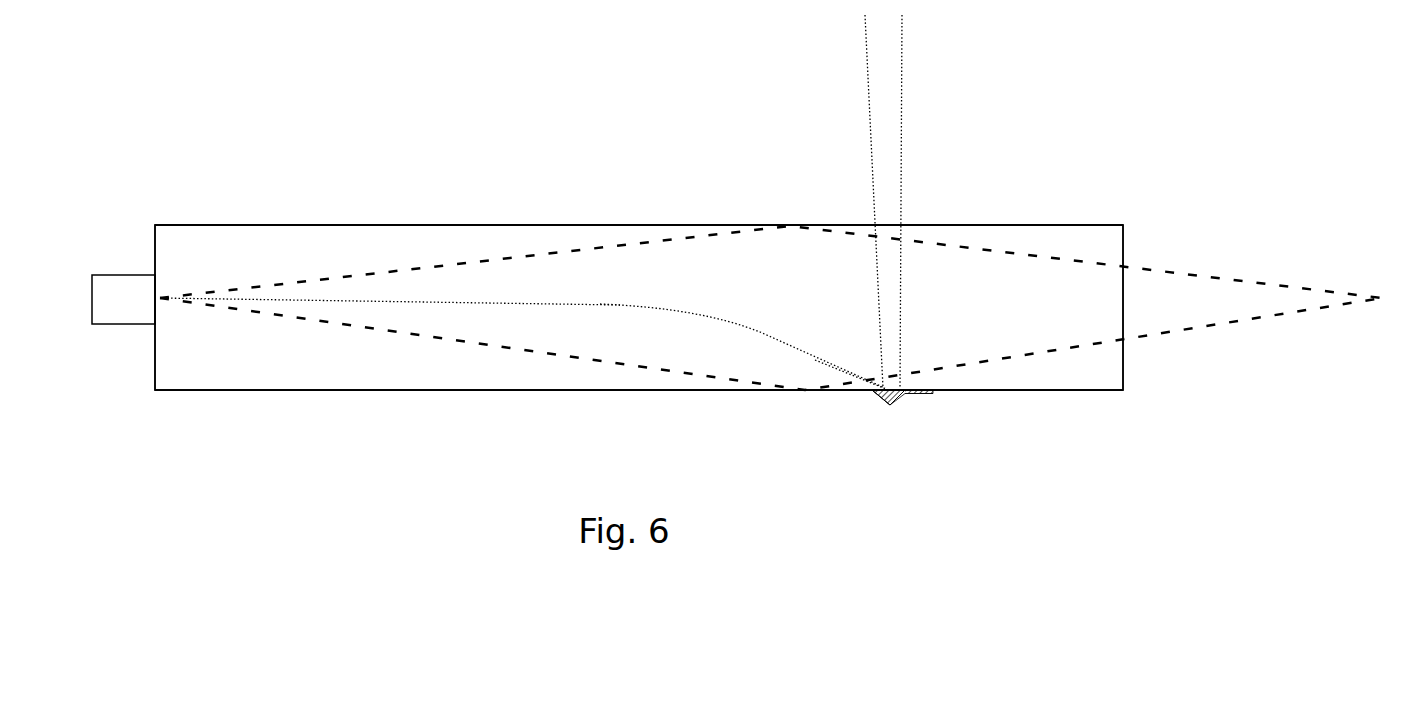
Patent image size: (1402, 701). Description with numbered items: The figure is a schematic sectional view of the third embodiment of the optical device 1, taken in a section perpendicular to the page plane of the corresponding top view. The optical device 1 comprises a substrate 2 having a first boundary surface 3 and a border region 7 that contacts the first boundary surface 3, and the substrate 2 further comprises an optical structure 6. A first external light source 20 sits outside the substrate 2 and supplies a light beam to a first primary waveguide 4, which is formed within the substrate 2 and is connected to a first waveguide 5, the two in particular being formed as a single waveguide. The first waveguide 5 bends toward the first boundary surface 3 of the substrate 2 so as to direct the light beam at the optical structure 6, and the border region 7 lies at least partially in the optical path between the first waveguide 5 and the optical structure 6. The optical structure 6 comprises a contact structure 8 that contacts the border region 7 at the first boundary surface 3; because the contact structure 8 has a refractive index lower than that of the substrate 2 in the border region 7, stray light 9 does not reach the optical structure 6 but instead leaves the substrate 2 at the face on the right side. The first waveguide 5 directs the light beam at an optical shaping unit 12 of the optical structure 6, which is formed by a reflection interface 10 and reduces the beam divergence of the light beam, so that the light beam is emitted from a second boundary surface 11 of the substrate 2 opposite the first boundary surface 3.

The optical device 1 is at (483, 185).
The substrate 2 is at (252, 252).
The first boundary surface 3 is at (407, 391).
The first primary waveguide 4 is at (362, 299).
The first waveguide 5 is at (605, 303).
The optical structure 6 is at (895, 408).
The border region 7 is at (865, 357).
The contact structure 8 is at (913, 388).
The stray light 9 is at (662, 240).
The reflection interface 10 is at (903, 400).
The second boundary surface 11 is at (949, 225).
The optical shaping unit 12 is at (888, 408).
The first external light source 20 is at (133, 298).